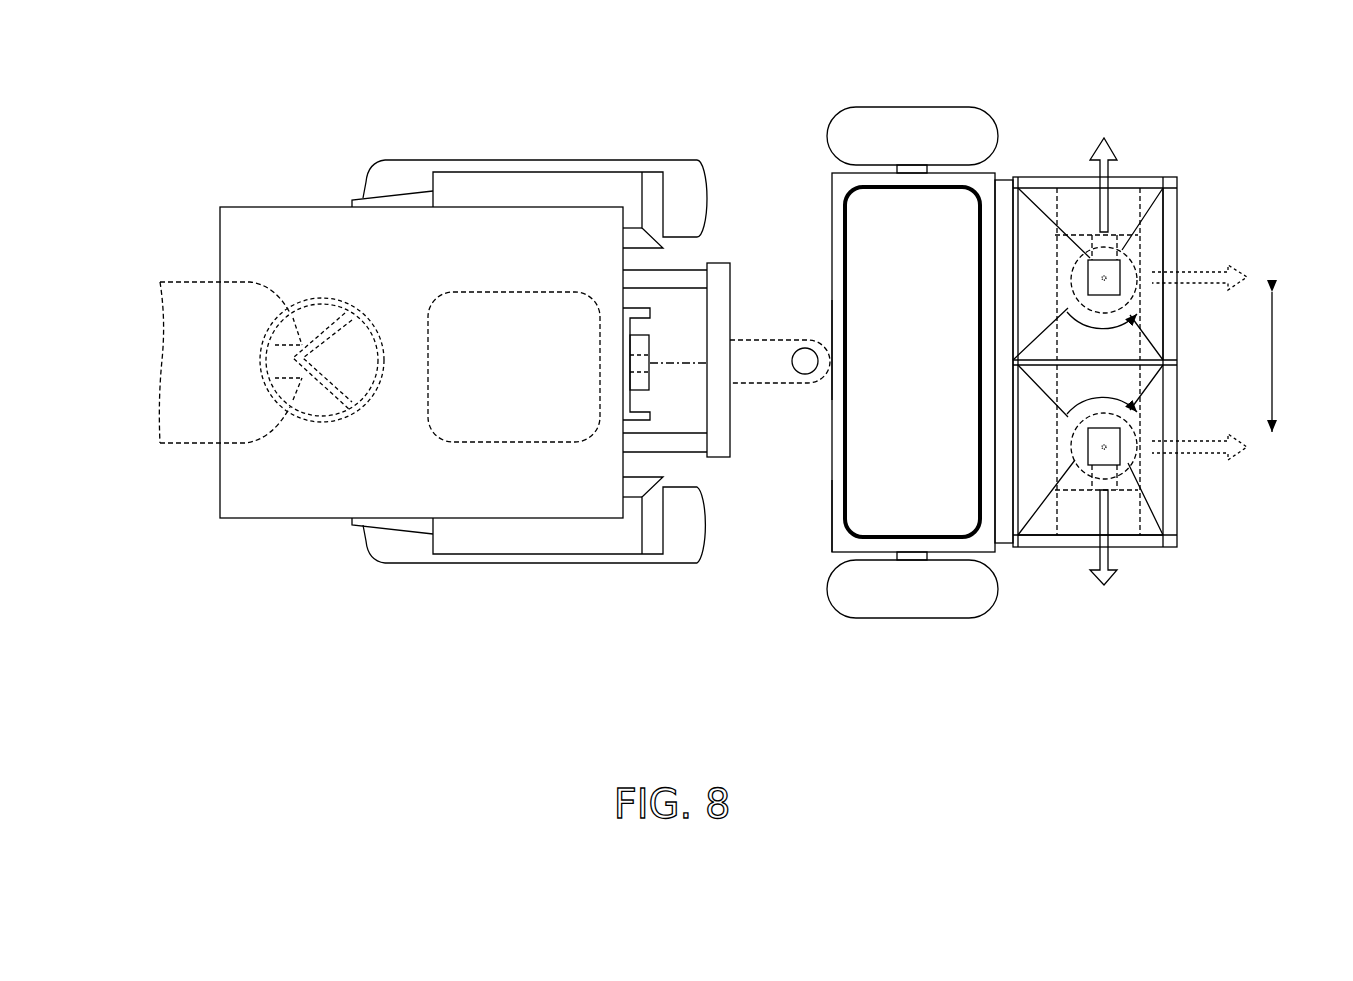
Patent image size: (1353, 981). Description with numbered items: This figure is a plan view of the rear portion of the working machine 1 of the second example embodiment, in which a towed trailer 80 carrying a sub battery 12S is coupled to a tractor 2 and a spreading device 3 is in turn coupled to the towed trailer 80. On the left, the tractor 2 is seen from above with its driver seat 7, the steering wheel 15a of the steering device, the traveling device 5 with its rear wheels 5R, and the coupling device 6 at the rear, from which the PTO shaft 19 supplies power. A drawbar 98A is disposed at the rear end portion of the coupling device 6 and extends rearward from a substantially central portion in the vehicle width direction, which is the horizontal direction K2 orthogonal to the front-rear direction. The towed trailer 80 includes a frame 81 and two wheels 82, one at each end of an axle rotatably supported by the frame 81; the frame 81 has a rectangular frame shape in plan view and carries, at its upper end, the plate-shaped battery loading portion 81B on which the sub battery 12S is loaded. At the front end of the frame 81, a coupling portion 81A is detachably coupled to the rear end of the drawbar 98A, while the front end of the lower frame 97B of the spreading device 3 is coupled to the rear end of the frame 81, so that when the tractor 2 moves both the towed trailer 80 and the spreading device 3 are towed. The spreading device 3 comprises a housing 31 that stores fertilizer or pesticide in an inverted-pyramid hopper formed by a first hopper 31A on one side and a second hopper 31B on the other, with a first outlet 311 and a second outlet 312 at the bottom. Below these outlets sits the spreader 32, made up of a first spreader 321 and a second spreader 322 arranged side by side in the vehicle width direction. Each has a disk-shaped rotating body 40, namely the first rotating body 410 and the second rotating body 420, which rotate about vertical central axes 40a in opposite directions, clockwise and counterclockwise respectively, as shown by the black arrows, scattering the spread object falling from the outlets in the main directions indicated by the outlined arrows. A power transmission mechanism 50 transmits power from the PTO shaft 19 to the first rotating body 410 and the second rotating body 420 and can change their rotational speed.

The working machine 1 is at (1018, 95).
The tractor 2 is at (300, 195).
The spreading device 3 is at (1222, 140).
The traveling device 5 is at (586, 150).
The rear wheel 5R is at (676, 564).
The coupling device 6 is at (689, 458).
The driver seat 7 is at (525, 443).
The sub battery 12S is at (842, 220).
The steering wheel 15a is at (310, 425).
The PTO shaft 19 is at (650, 366).
The housing 31 is at (1043, 207).
The first hopper 31A is at (1085, 523).
The second hopper 31B is at (1058, 203).
The first outlet 311 is at (1045, 537).
The second outlet 312 is at (1105, 278).
The spreader 32 is at (1103, 355).
The first spreader 321 is at (1117, 480).
The second spreader 322 is at (1085, 250).
The rotating body 40 is at (1146, 310).
The central axis 40a is at (1110, 240).
The first rotating body 410 is at (1104, 447).
The second rotating body 420 is at (1122, 252).
The power transmission mechanism 50 is at (1060, 447).
The towed trailer 80 is at (817, 472).
The frame 81 is at (832, 450).
The coupling portion 81A is at (828, 345).
The battery loading portion 81B is at (842, 520).
The wheel 82 is at (827, 140).
The lower frame 97B is at (1005, 545).
The drawbar 98A is at (797, 386).
The horizontal direction K2 is at (1273, 378).